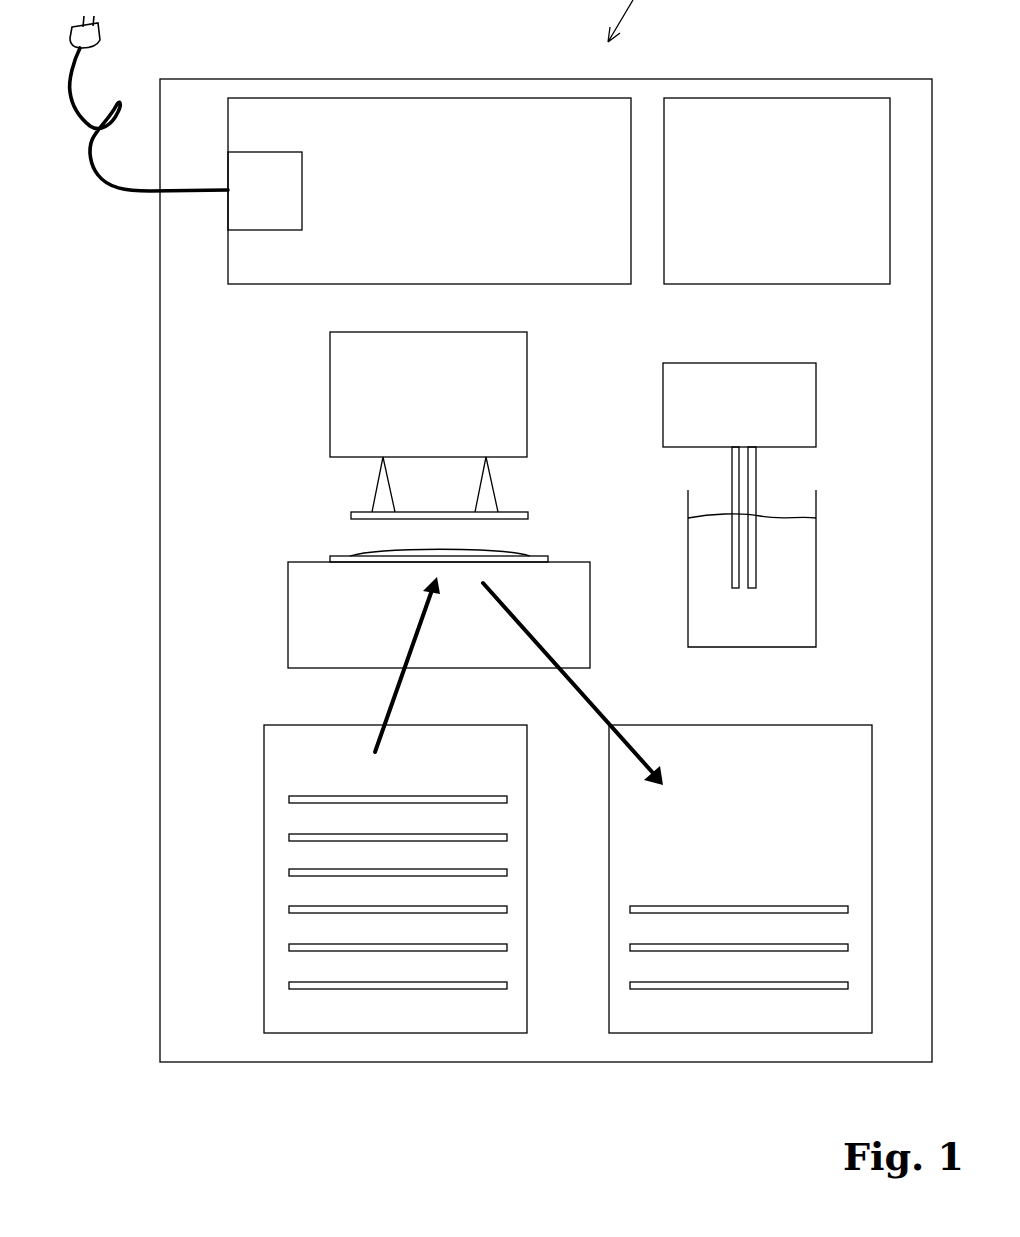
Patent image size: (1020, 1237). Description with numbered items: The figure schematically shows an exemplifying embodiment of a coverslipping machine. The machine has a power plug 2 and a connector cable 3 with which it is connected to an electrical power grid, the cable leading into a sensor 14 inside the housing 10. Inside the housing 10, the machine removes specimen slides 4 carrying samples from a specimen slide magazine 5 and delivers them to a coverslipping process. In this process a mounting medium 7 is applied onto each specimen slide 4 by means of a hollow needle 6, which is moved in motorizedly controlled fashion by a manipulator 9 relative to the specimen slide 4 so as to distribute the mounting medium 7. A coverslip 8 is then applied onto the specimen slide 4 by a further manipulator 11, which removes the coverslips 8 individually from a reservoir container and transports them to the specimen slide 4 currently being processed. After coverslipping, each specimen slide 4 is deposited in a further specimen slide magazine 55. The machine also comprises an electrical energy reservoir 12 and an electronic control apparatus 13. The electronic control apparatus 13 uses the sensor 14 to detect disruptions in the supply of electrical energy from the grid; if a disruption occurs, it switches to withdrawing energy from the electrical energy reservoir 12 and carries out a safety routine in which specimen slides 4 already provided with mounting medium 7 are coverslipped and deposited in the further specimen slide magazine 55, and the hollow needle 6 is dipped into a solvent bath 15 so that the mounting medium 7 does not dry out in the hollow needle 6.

The power plug 2 is at (92, 42).
The connector cable 3 is at (113, 185).
The specimen slide 4 is at (530, 553).
The specimen slide magazine 5 is at (275, 765).
The hollow needle 6 is at (792, 495).
The mounting medium 7 is at (390, 552).
The coverslip 8 is at (513, 512).
The manipulator 9 is at (802, 388).
The housing 10 is at (161, 438).
The further manipulator 11 is at (522, 396).
The electrical energy reservoir 12 is at (785, 127).
The electronic control apparatus 13 is at (452, 117).
The sensor 14 is at (285, 203).
The solvent bath 15 is at (799, 568).
The further specimen slide magazine 55 is at (858, 775).